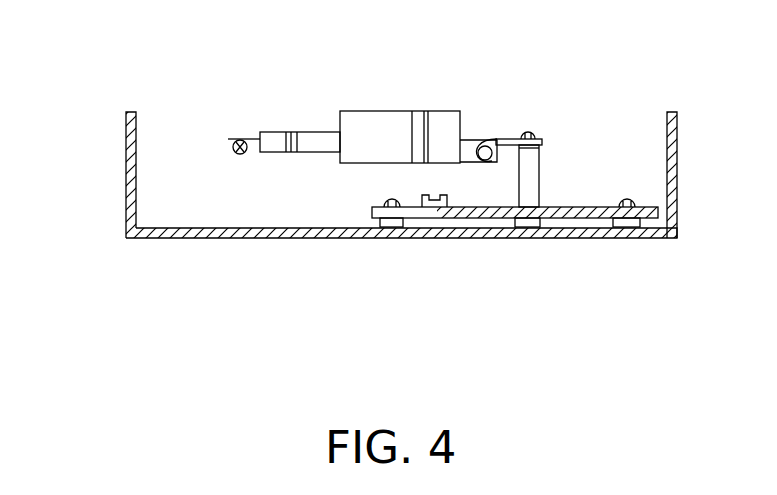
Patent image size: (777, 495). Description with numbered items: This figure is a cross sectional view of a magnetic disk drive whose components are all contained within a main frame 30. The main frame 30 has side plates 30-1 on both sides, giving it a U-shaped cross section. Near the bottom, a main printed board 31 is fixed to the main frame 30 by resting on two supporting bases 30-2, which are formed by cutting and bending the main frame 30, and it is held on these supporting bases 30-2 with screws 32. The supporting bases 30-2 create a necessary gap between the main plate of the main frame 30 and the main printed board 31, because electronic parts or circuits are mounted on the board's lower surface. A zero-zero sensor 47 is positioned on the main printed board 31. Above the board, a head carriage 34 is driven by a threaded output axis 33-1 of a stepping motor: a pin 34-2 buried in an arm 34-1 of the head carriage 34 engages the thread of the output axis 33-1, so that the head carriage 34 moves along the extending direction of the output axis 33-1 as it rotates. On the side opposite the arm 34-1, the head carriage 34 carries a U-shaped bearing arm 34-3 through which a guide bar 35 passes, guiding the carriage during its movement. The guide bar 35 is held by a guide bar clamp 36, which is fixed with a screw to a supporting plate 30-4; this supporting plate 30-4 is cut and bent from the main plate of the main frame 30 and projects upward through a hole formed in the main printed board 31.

The main frame 30 is at (173, 238).
The side plate 30-1 is at (126, 172).
The supporting base 30-2 is at (398, 227).
The supporting plate 30-4 is at (527, 172).
The main printed board 31 is at (542, 218).
The screw 32 is at (627, 199).
The output axis 33-1 is at (237, 155).
The head carriage 34 is at (408, 111).
The arm 34-1 is at (312, 132).
The pin 34-2 is at (240, 140).
The bearing arm 34-3 is at (473, 140).
The guide bar 35 is at (488, 162).
The guide bar clamp 36 is at (503, 140).
The zero-zero sensor 47 is at (467, 218).